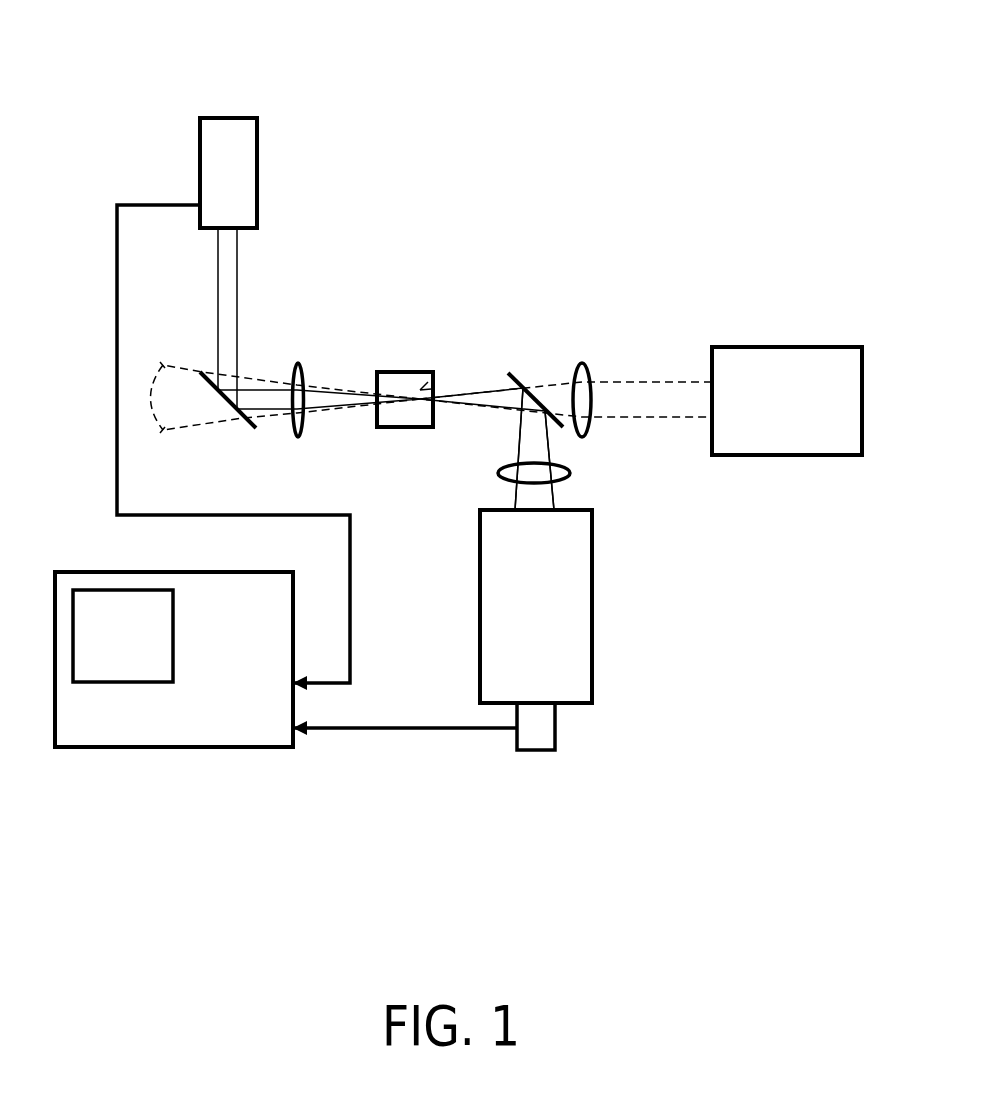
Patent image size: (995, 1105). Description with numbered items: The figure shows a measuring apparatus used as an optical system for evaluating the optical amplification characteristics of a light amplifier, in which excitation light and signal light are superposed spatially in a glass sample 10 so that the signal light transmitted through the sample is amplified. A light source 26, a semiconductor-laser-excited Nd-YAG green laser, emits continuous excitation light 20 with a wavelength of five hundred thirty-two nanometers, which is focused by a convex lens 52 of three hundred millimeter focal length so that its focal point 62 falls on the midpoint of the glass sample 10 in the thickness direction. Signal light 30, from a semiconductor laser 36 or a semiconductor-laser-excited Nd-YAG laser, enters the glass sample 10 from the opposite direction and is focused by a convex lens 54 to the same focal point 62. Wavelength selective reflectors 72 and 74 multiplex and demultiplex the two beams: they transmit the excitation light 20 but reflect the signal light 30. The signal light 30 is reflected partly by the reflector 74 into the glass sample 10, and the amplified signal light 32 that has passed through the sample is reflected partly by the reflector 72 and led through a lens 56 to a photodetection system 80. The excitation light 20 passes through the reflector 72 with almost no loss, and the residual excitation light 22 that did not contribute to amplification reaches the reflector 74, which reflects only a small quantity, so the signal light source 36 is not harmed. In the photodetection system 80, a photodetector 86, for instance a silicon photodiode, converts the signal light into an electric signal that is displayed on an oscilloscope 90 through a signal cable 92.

The glass sample 10 is at (390, 415).
The excitation light 20 is at (652, 397).
The excitation light that has not contributed to optical amplification 22 is at (313, 412).
The light source 26 is at (752, 368).
The signal light 30 is at (227, 298).
The signal light that has passed through the glass sample 32 is at (540, 445).
The semiconductor laser 36 is at (235, 140).
The convex lens 52 is at (587, 363).
The convex lens 54 is at (300, 365).
The lens 56 is at (569, 474).
The focal point 62 is at (422, 389).
The wavelength selective reflector 72 is at (520, 373).
The wavelength selective reflector 74 is at (200, 372).
The photodetection system 80 is at (567, 578).
The photodetector 86 is at (527, 737).
The oscilloscope 90 is at (153, 730).
The signal cable 92 is at (348, 730).